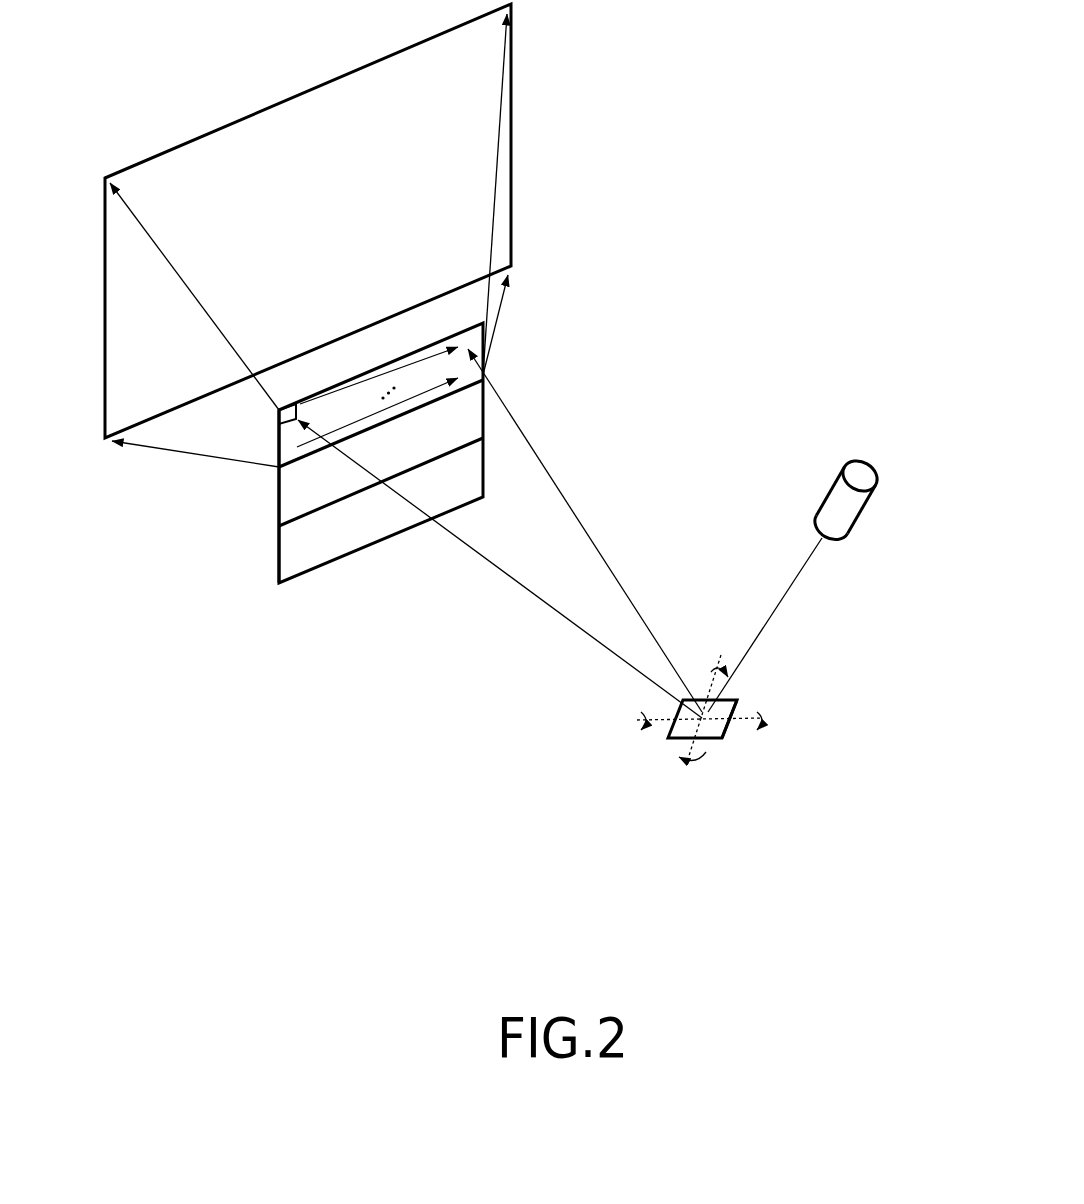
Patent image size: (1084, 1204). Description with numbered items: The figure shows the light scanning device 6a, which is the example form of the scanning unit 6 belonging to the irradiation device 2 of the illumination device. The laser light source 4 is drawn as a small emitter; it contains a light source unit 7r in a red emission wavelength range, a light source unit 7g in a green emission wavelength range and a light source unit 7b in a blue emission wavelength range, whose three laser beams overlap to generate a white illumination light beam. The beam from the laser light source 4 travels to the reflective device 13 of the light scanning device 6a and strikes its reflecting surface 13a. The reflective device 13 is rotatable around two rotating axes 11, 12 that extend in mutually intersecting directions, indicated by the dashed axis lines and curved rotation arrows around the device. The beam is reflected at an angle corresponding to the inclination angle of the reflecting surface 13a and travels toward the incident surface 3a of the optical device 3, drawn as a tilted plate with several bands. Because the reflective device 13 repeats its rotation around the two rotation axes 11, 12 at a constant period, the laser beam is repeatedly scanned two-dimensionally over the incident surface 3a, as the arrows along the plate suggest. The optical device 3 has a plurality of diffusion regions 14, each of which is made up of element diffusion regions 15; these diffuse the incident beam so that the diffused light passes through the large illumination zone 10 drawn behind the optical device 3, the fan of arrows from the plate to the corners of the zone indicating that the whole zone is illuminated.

The illumination zone 10 is at (513, 153).
The element diffusion region 15 is at (278, 417).
The diffusion region 14 is at (283, 443).
The optical device 3 is at (337, 486).
The incident surface 3a is at (290, 565).
The laser light source 4 is at (760, 477).
The light source unit in a red emission wavelength range 7r is at (849, 497).
The light source unit in a green emission wavelength range 7g is at (849, 497).
The light source unit in a blue emission wavelength range 7b is at (835, 502).
The irradiation device 2 is at (790, 608).
The scanning unit 6 is at (739, 779).
The light scanning device 6a is at (702, 752).
The rotating axis 11 is at (712, 685).
The rotating axis 12 is at (743, 720).
The reflective device 13 is at (728, 732).
The reflecting surface 13a is at (668, 732).